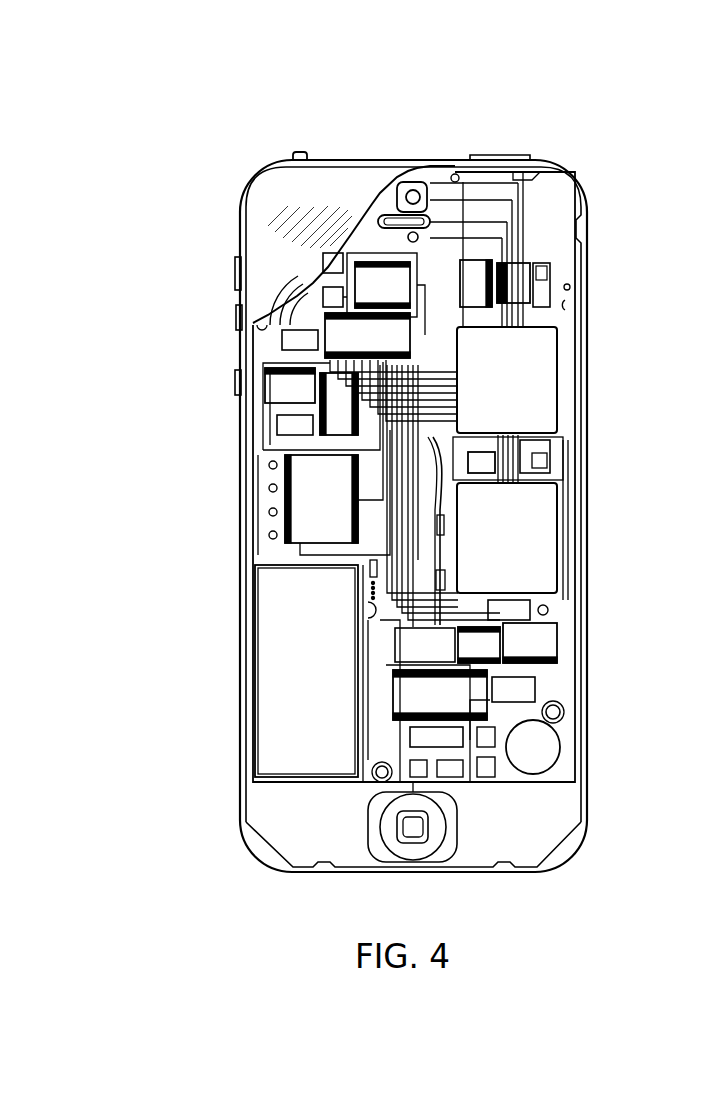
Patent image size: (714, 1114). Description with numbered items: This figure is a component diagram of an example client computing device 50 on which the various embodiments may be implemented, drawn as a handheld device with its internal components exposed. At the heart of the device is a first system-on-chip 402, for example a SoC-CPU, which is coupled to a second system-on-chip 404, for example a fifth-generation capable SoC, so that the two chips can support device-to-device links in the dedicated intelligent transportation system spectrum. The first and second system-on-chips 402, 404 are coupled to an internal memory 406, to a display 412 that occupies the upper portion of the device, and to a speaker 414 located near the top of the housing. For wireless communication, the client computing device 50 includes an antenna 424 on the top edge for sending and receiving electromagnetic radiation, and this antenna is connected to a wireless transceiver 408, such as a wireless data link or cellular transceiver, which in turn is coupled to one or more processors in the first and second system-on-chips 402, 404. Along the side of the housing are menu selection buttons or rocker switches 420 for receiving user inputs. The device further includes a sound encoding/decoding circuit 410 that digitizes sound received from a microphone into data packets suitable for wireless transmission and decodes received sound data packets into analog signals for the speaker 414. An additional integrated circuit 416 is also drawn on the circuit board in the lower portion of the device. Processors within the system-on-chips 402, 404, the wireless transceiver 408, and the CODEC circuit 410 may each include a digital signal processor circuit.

The client computing device 50 is at (119, 66).
The first system-on-chip 402 is at (525, 394).
The second system-on-chip 404 is at (525, 551).
The internal memory 406 is at (385, 351).
The wireless transceiver 408 is at (526, 272).
The sound encoding/decoding (CODEC) circuit 410 is at (401, 296).
The display 412 is at (265, 232).
The speaker 414 is at (384, 214).
The integrated circuit 416 is at (460, 706).
The menu selection buttons or rocker switches 420 is at (240, 315).
The antenna 424 is at (292, 154).